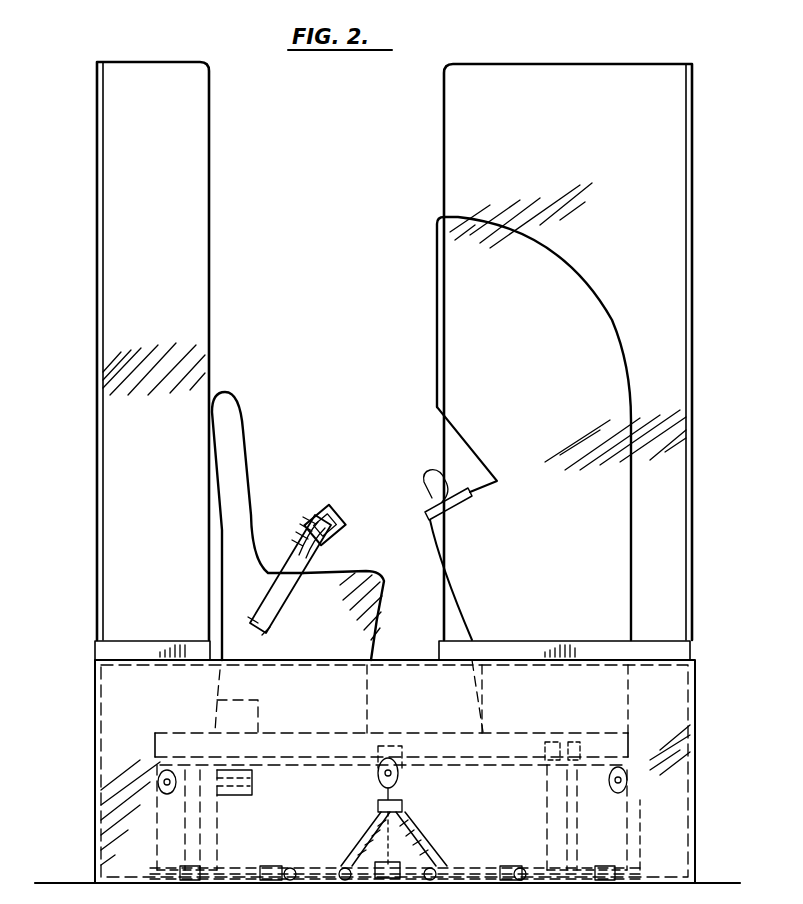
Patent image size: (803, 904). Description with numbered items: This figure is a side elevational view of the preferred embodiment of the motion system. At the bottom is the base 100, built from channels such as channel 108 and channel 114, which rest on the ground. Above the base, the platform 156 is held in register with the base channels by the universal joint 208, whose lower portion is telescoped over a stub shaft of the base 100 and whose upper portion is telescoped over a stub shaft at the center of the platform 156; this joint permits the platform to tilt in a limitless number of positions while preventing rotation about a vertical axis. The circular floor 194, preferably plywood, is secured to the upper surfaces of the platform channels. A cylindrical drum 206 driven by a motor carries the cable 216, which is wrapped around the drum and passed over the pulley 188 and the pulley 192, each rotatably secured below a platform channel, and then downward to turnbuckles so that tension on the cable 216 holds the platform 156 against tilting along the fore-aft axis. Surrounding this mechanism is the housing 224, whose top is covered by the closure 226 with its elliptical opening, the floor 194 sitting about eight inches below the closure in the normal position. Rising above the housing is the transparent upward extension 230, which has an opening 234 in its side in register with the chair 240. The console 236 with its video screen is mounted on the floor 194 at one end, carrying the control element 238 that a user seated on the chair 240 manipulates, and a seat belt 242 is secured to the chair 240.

The base 100 is at (455, 822).
The channel 108 is at (652, 878).
The channel 114 is at (128, 880).
The platform 156 is at (518, 730).
The pulley 188 is at (625, 786).
The pulley 192 is at (158, 776).
The circular floor 194 is at (606, 733).
The cylindrical drum 206 is at (240, 796).
The universal joint 208 is at (378, 786).
The cable 216 is at (100, 855).
The housing 224 is at (696, 753).
The closure 226 is at (532, 641).
The transparent upward extension 230 is at (103, 166).
The opening 234 is at (210, 172).
The console 236 is at (437, 350).
The control element 238 is at (430, 472).
The chair 240 is at (240, 455).
The seat belt 242 is at (313, 528).